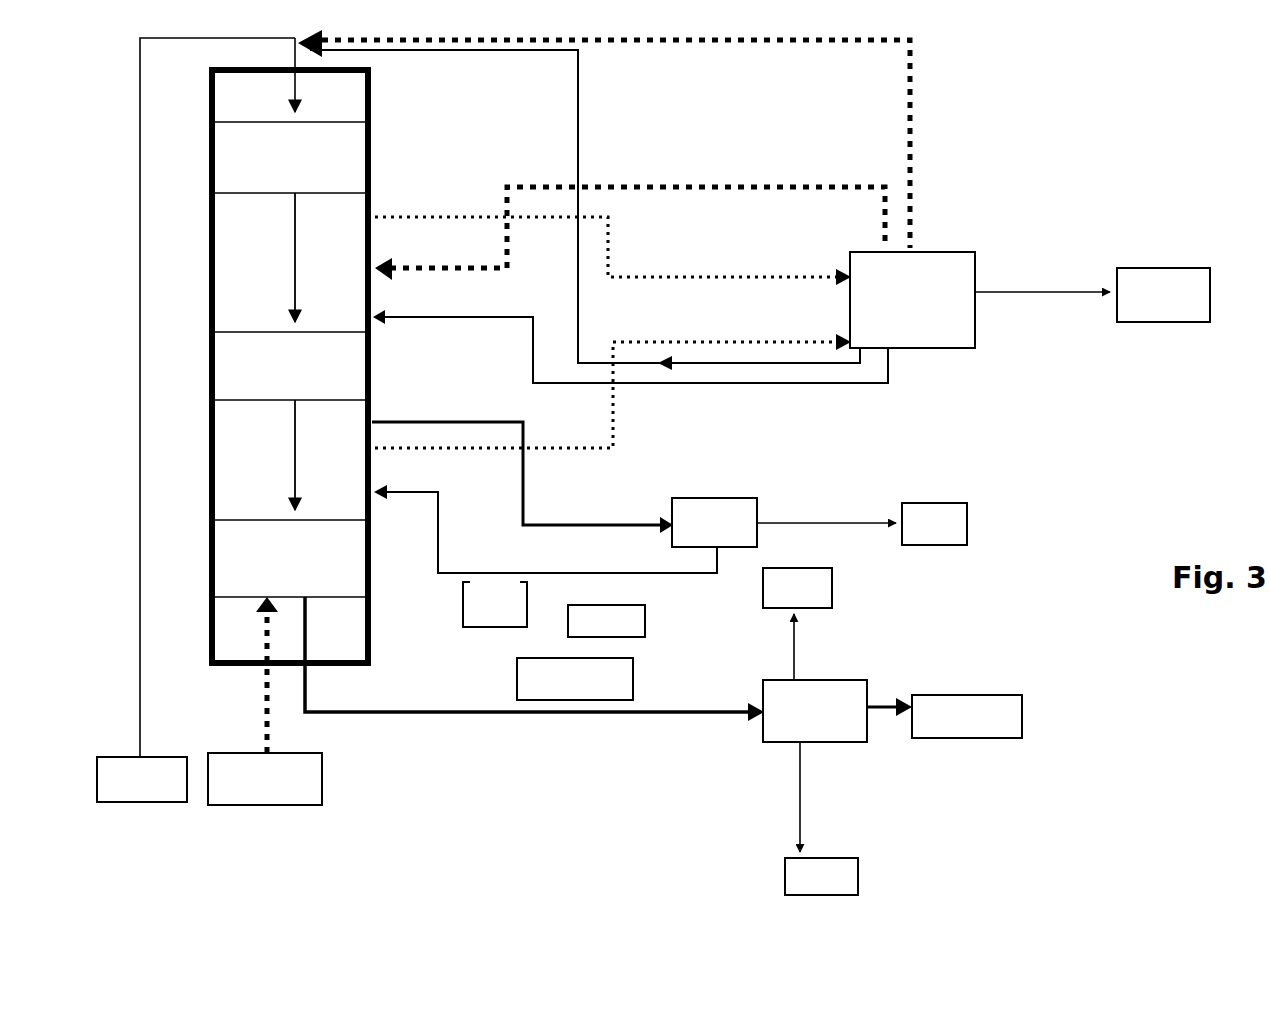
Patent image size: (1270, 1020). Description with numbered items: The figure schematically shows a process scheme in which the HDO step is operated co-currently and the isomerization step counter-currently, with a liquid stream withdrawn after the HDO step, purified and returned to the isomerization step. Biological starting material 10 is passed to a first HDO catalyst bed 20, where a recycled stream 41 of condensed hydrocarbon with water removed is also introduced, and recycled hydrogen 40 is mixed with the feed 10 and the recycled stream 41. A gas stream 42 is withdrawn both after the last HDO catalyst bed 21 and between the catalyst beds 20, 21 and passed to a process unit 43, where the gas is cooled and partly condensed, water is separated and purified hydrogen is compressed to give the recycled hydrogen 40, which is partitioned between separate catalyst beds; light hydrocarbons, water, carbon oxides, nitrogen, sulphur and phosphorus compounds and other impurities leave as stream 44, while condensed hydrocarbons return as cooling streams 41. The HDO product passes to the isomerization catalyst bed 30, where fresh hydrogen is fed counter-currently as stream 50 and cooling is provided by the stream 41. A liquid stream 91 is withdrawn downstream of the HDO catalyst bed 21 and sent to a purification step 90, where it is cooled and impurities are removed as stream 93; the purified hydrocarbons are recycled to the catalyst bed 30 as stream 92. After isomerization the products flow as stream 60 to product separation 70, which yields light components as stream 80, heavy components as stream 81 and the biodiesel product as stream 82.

The biological starting material 10 is at (196, 420).
The first HDO catalyst bed 20 is at (290, 180).
The last HDO catalyst bed 21 is at (290, 421).
The isomerization catalyst bed 30 is at (290, 561).
The recycled hydrogen 40 is at (806, 48).
The recycled stream 41 is at (680, 366).
The gas stream 42 is at (678, 333).
The process unit 43 is at (912, 300).
The stream 44 is at (1092, 295).
The stream 50 is at (265, 701).
The stream 60 is at (534, 659).
The product separation 70 is at (815, 711).
The stream 80 is at (797, 624).
The stream 81 is at (821, 818).
The stream 82 is at (944, 716).
The purification step 90 is at (564, 484).
The liquid stream 91 is at (553, 533).
The stream 92 is at (452, 580).
The stream 93 is at (862, 524).